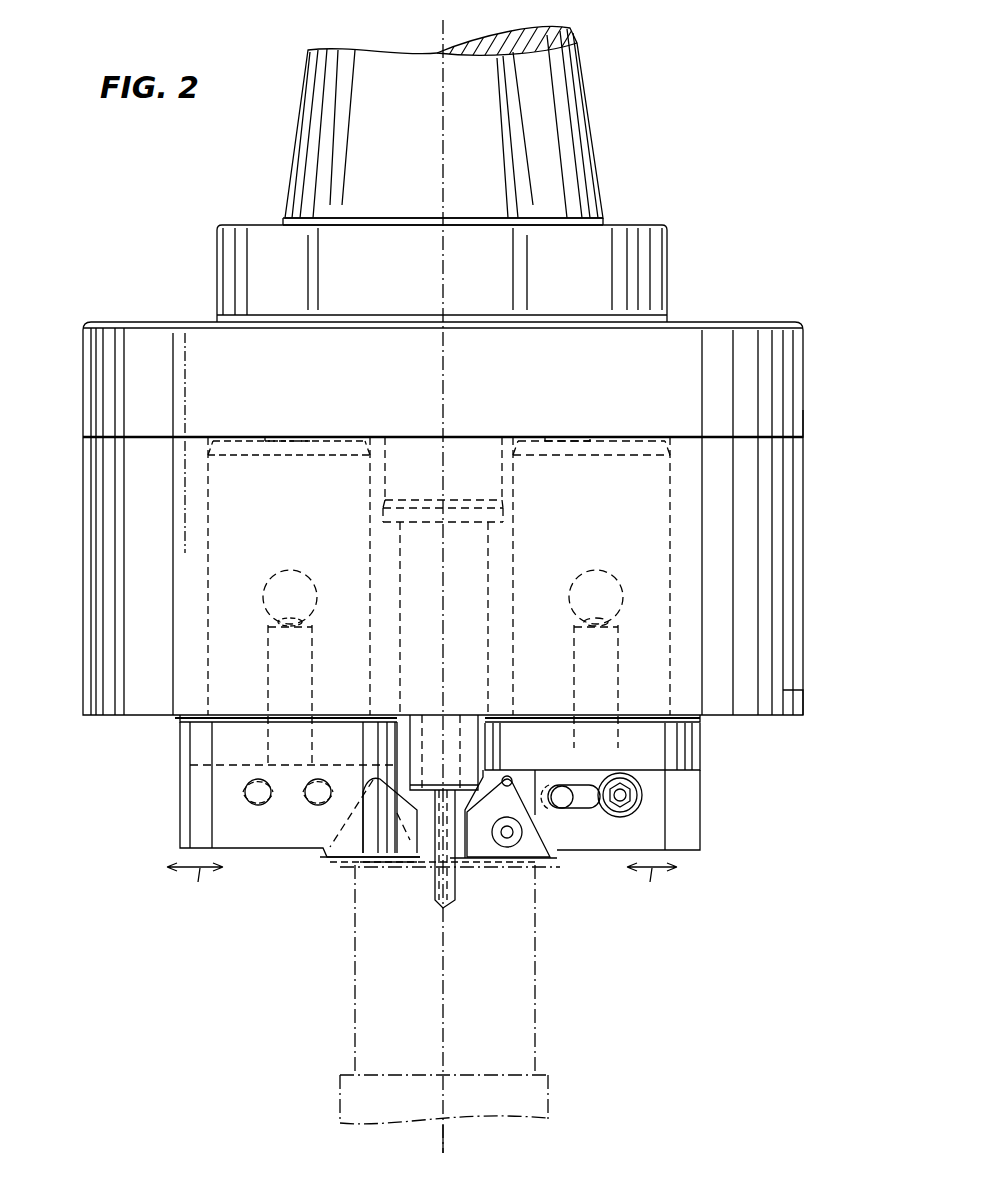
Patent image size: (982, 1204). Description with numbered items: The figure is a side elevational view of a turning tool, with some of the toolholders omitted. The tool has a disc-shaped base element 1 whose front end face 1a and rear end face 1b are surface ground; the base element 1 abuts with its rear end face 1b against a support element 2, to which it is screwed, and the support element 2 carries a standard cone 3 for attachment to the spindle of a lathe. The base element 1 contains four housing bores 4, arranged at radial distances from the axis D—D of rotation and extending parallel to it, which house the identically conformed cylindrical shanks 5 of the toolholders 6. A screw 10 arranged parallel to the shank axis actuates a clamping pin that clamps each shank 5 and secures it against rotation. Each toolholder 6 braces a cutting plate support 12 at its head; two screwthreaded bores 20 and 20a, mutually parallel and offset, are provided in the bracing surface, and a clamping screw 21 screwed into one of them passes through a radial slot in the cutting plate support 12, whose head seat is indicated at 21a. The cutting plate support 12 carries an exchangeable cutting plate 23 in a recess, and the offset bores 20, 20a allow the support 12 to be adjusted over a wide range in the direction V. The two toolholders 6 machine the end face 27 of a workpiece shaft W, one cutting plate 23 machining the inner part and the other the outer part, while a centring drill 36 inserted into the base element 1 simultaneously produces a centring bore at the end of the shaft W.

The base element 1 is at (770, 693).
The front end face 1a is at (802, 717).
The rear end face 1b is at (775, 437).
The support element 2 is at (745, 346).
The standard cone 3 is at (552, 118).
The housing bore 4 is at (218, 632).
The cylindrical shank 5 is at (176, 720).
The toolholder 6 is at (171, 766).
The screw 10 is at (282, 663).
The cutting plate support 12 is at (647, 838).
The screwthreaded bore 20 is at (258, 800).
The screwthreaded bore 20a is at (318, 800).
The clamping screw 21 is at (633, 810).
The screw head socket 21a is at (640, 793).
The cutting plate 23 is at (347, 870).
The end face 27 is at (535, 863).
The centring drill 36 is at (433, 877).
The axis of rotation D is at (443, 38).
The direction of adjustment V is at (422, 886).
The shaft W is at (513, 1000).